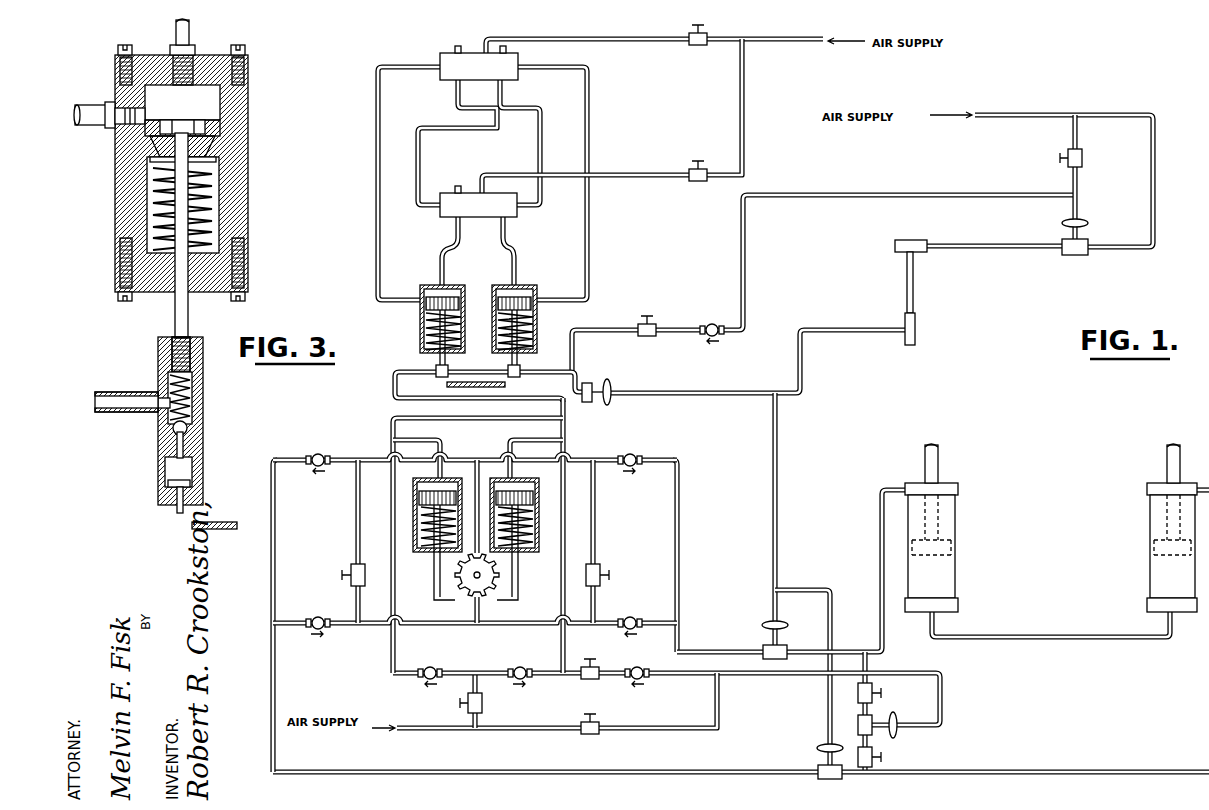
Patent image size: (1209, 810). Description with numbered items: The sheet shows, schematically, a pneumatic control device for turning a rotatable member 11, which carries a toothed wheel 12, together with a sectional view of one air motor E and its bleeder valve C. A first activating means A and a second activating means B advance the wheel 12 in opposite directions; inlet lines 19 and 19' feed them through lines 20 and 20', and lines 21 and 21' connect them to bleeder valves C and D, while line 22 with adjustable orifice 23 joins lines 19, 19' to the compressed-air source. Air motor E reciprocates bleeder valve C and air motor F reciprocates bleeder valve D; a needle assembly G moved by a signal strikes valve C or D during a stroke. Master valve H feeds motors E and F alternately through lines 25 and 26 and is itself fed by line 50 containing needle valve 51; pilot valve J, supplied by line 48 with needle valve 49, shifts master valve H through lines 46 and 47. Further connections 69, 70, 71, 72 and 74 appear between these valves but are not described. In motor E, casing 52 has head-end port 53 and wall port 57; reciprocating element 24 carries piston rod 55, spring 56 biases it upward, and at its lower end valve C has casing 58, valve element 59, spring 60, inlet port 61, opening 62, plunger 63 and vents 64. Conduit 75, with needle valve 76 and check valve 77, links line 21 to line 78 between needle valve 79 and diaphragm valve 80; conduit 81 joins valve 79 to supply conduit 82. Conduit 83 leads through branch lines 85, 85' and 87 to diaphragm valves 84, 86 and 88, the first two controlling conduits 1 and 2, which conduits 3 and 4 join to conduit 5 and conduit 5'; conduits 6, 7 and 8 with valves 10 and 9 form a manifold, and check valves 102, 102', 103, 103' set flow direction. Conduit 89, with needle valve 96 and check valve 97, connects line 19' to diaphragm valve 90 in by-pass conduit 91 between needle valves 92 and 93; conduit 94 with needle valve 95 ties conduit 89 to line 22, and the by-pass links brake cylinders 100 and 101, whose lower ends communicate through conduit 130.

In FIG. 1, the conduit 1 is at (878, 522).
In FIG. 1, the conduit 2 is at (275, 688).
In FIG. 1, the conduit 3 is at (679, 548).
In FIG. 1, the conduit 4 is at (272, 545).
In FIG. 1, the conduit 5 is at (475, 445).
In FIG. 1, the conduit 5' is at (475, 637).
In FIG. 1, the conduit 6 is at (356, 516).
In FIG. 1, the conduit 7 is at (475, 612).
In FIG. 1, the conduit 8 is at (596, 516).
In FIG. 1, the valve 9 is at (601, 570).
In FIG. 1, the valve 10 is at (350, 568).
In FIG. 1, the rotatable member 11 is at (474, 575).
In FIG. 1, the toothed wheel 12 is at (480, 595).
In FIG. 1, the inlet line 19 is at (505, 678).
In FIG. 1, the inlet line 19' is at (545, 648).
In FIG. 1, the line 20 is at (429, 452).
In FIG. 1, the line 20' is at (523, 452).
In FIG. 3, the line 21 is at (121, 391).
In FIG. 1, the line 21 is at (461, 537).
In FIG. 1, the line 21' is at (583, 510).
In FIG. 1, the line 22 is at (473, 720).
In FIG. 1, the adjustable orifice 23 is at (484, 703).
In FIG. 3, the reciprocating element 24 is at (212, 140).
In FIG. 3, the inlet line 25 is at (190, 32).
In FIG. 1, the inlet line 25 is at (506, 240).
In FIG. 1, the inlet line 26 is at (455, 240).
In FIG. 3, the line 46 is at (100, 110).
In FIG. 1, the line 46 is at (589, 98).
In FIG. 1, the line 47 is at (378, 75).
In FIG. 1, the line 48 is at (641, 41).
In FIG. 1, the needle valve 49 is at (696, 46).
In FIG. 1, the line 50 is at (640, 177).
In FIG. 1, the needle valve 51 is at (696, 182).
In FIG. 3, the cylindrical casing 52 is at (122, 180).
In FIG. 3, the port 53 is at (185, 80).
In FIG. 3, the piston rod 55 is at (178, 312).
In FIG. 3, the piston spring 56 is at (200, 200).
In FIG. 3, the port 57 is at (142, 117).
In FIG. 3, the casing 58 is at (196, 418).
In FIG. 3, the valve element 59 is at (188, 432).
In FIG. 3, the spring 60 is at (192, 388).
In FIG. 3, the port 61 is at (160, 402).
In FIG. 3, the opening 62 is at (177, 500).
In FIG. 3, the plunger 63 is at (178, 518).
In FIG. 3, the vents 64 is at (160, 476).
In FIG. 1, the pipe 69 is at (542, 115).
In FIG. 1, the pipe 70 is at (422, 127).
In FIG. 1, the port 71 is at (506, 50).
In FIG. 1, the port 72 is at (455, 50).
In FIG. 1, the port 74 is at (456, 190).
In FIG. 1, the conduit 75 is at (975, 196).
In FIG. 1, the adjustable needle valve 76 is at (650, 322).
In FIG. 1, the check valve 77 is at (710, 324).
In FIG. 1, the line 78 is at (1080, 222).
In FIG. 1, the needle valve 79 is at (1083, 160).
In FIG. 1, the diaphragm valve 80 is at (1068, 256).
In FIG. 1, the conduit 81 is at (1071, 140).
In FIG. 1, the conduit 82 is at (1068, 115).
In FIG. 1, the conduit 83 is at (1010, 246).
In FIG. 1, the diaphragm valve 84 is at (764, 650).
In FIG. 1, the branch line 85 is at (794, 519).
In FIG. 1, the branch line 85' is at (802, 667).
In FIG. 1, the diaphragm valve 86 is at (820, 770).
In FIG. 1, the branch line 87 is at (690, 392).
In FIG. 1, the diaphragm valve 88 is at (592, 383).
In FIG. 1, the conduit 89 is at (686, 676).
In FIG. 1, the diaphragm valve 90 is at (858, 725).
In FIG. 1, the by-pass conduit 91 is at (870, 666).
In FIG. 1, the needle valve 92 is at (884, 694).
In FIG. 1, the needle valve 93 is at (884, 758).
In FIG. 1, the conduit 94 is at (692, 734).
In FIG. 1, the needle valve 95 is at (596, 722).
In FIG. 1, the needle valve 96 is at (595, 659).
In FIG. 1, the check valve 97 is at (640, 668).
In FIG. 1, the cylinder 100 is at (938, 578).
In FIG. 1, the cylinder 101 is at (1162, 572).
In FIG. 1, the check valve 102 is at (644, 450).
In FIG. 1, the check valve 102' is at (308, 450).
In FIG. 1, the check valve 103 is at (640, 616).
In FIG. 1, the check valve 103' is at (308, 614).
In FIG. 1, the interconnecting conduit 130 is at (1050, 634).
In FIG. 1, the first activating means A is at (417, 553).
In FIG. 1, the second activating means B is at (533, 553).
In FIG. 3, the bleeder valve C is at (158, 492).
In FIG. 1, the bleeder valve C is at (520, 375).
In FIG. 1, the bleeder valve D is at (436, 375).
In FIG. 3, the air motor E is at (248, 62).
In FIG. 1, the air motor E is at (536, 292).
In FIG. 1, the air motor F is at (420, 292).
In FIG. 3, the needle assembly G is at (212, 522).
In FIG. 1, the needle assembly G is at (490, 383).
In FIG. 1, the master valve H is at (478, 205).
In FIG. 1, the pilot valve J is at (479, 66).